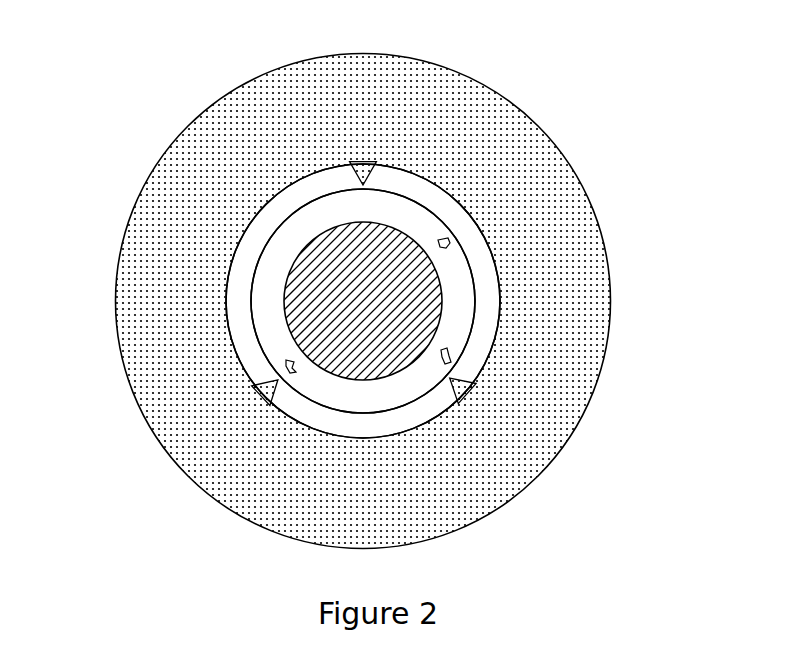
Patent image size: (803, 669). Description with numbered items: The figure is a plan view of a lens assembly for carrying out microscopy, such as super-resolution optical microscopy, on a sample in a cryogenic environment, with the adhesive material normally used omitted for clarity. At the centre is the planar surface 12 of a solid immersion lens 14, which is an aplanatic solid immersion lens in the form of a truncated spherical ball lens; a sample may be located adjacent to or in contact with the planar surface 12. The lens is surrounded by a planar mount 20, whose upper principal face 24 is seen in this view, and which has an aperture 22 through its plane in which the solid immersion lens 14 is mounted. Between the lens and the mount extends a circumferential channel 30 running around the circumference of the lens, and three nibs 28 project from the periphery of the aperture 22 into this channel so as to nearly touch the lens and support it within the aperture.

The planar surface 12 is at (393, 238).
The solid immersion lens 14 is at (290, 245).
The planar mount 20 is at (607, 248).
The aperture 22 is at (478, 352).
The principal face 24 is at (552, 168).
The nibs 28 is at (363, 177).
The circumferential channel 30 is at (241, 280).